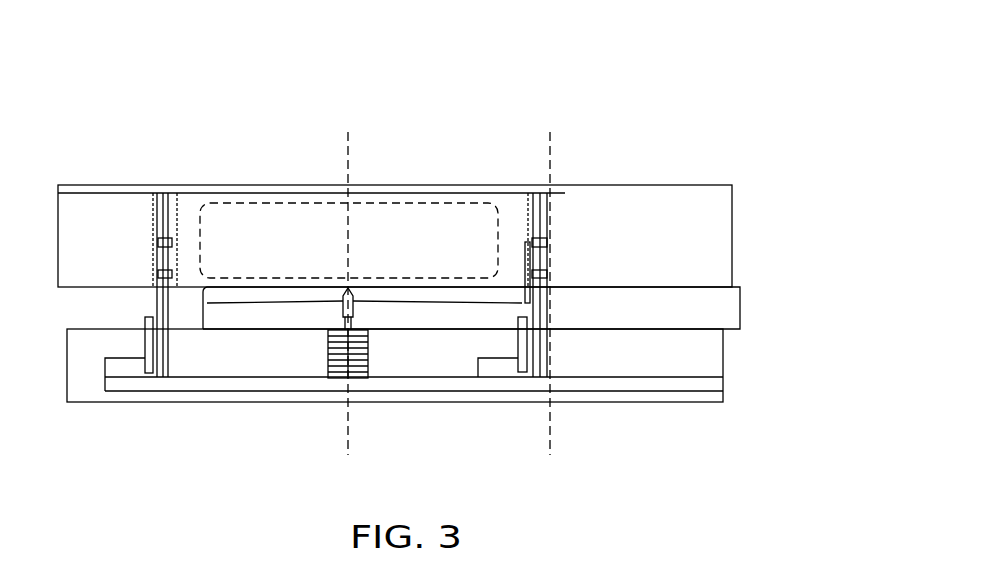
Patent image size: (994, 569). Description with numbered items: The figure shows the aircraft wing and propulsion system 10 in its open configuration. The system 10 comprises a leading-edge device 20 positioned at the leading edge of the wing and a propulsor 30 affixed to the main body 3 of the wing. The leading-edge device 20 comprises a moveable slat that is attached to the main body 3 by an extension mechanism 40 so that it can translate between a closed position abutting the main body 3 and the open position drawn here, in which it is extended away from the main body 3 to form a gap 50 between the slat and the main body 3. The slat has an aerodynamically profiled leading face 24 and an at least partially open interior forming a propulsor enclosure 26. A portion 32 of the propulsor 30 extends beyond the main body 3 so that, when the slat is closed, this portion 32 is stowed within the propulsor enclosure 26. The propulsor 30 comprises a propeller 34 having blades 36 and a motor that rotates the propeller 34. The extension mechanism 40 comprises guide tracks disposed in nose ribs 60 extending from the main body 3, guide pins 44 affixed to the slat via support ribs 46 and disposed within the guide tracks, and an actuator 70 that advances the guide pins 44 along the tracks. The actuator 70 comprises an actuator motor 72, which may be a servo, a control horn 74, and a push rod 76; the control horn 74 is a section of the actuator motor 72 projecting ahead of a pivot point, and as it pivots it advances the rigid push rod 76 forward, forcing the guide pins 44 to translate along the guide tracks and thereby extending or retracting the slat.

The main body 3 is at (77, 355).
The aircraft wing and propulsion system 10 is at (797, 97).
The leading-edge device 20 is at (72, 215).
The leading face 24 is at (666, 167).
The propulsor enclosure 26 is at (322, 220).
The propulsor 30 is at (368, 224).
The portion of the propulsor 32 is at (347, 312).
The propeller 34 is at (310, 326).
The blades 36 is at (375, 303).
The extension mechanism 40 is at (495, 337).
The guide pins 44 is at (160, 240).
The support ribs 46 is at (163, 215).
The gap 50 is at (738, 287).
The nose ribs 60 is at (163, 377).
The actuator 70 is at (113, 373).
The actuator motor 72 is at (137, 376).
The control horn 74 is at (518, 372).
The push rod 76 is at (527, 292).